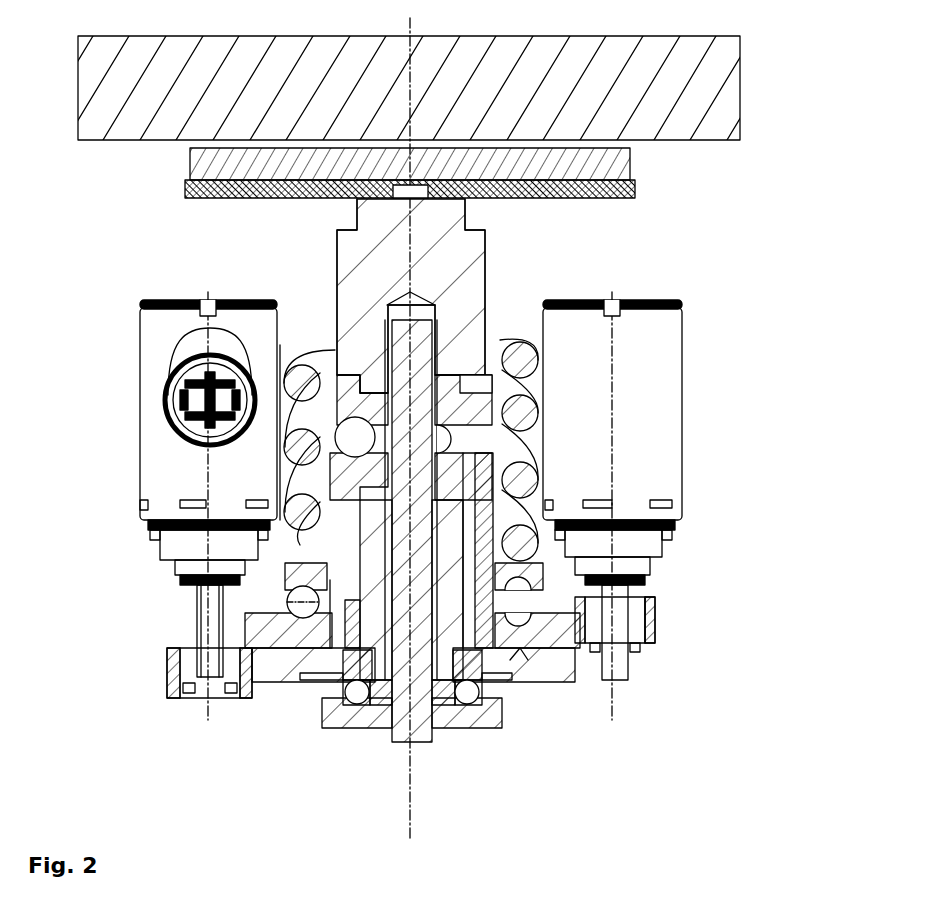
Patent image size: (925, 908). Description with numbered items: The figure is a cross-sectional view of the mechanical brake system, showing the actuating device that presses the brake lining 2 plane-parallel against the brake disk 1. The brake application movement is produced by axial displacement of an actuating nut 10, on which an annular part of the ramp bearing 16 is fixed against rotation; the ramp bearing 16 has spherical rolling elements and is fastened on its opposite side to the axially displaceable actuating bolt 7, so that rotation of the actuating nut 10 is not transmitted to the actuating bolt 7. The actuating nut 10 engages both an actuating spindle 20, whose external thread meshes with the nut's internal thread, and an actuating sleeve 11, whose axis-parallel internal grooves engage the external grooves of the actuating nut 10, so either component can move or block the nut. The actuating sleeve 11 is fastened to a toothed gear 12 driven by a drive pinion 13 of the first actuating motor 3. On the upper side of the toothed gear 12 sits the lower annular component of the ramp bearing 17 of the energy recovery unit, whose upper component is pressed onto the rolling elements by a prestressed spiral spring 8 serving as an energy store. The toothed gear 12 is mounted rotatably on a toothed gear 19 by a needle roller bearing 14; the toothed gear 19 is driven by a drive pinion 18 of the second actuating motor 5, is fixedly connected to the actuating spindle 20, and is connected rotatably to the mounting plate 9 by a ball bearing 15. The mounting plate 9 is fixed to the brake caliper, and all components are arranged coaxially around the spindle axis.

The brake disk 1 is at (88, 128).
The brake lining 2 is at (172, 178).
The first actuating motor 3 is at (660, 397).
The second actuating motor 5 is at (165, 462).
The actuating bolt 7 is at (472, 256).
The spiral spring 8 is at (545, 335).
The mounting plate 9 is at (478, 730).
The actuating nut 10 is at (548, 472).
The actuating sleeve 11 is at (545, 590).
The toothed gear 12 is at (655, 612).
The drive pinion 13 is at (656, 645).
The needle roller bearing 14 is at (520, 645).
The ball bearing 15 is at (503, 687).
The ramp bearing 16 is at (255, 358).
The ramp bearing of the energy recovery unit 17 is at (272, 601).
The drive pinion 18 is at (168, 690).
The toothed gear B 19 is at (270, 684).
The actuating spindle 20 is at (395, 744).